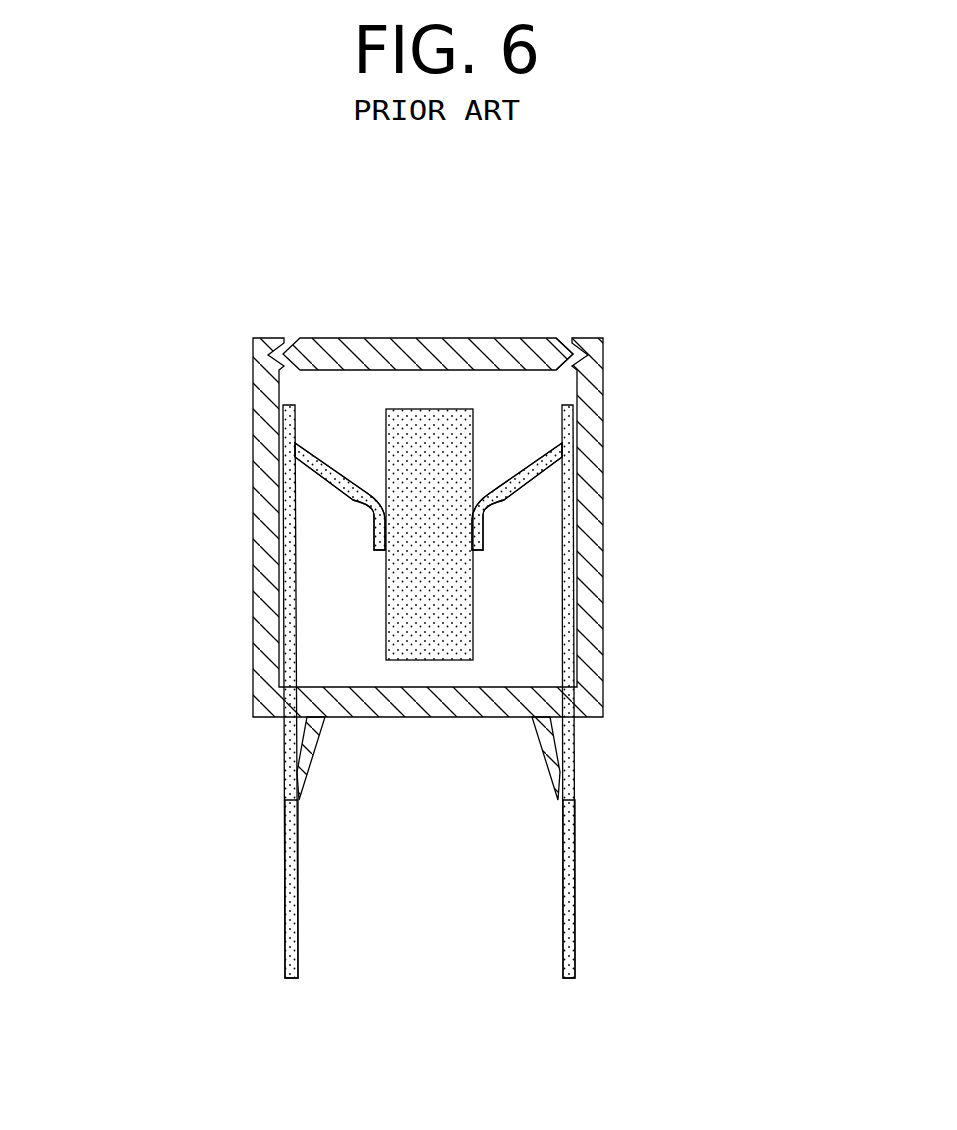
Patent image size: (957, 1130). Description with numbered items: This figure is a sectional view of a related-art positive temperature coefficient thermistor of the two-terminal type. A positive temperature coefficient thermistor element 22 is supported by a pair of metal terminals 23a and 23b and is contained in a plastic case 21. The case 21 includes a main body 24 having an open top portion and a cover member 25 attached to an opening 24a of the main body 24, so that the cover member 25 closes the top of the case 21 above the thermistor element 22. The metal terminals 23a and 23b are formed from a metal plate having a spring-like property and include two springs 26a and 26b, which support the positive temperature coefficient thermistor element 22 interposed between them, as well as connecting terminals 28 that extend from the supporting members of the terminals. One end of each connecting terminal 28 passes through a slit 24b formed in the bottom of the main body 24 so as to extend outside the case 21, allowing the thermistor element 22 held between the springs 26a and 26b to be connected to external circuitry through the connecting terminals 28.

The plastic case 21 is at (412, 577).
The positive temperature coefficient thermistor element 22 is at (412, 409).
The metal terminal 23a is at (263, 819).
The metal terminal 23b is at (597, 825).
The main body 24 is at (603, 514).
The opening 24a is at (565, 311).
The slit 24b is at (310, 758).
The cover member 25 is at (533, 337).
The spring 26a is at (357, 503).
The spring 26b is at (428, 496).
The connecting terminal 28 is at (285, 897).